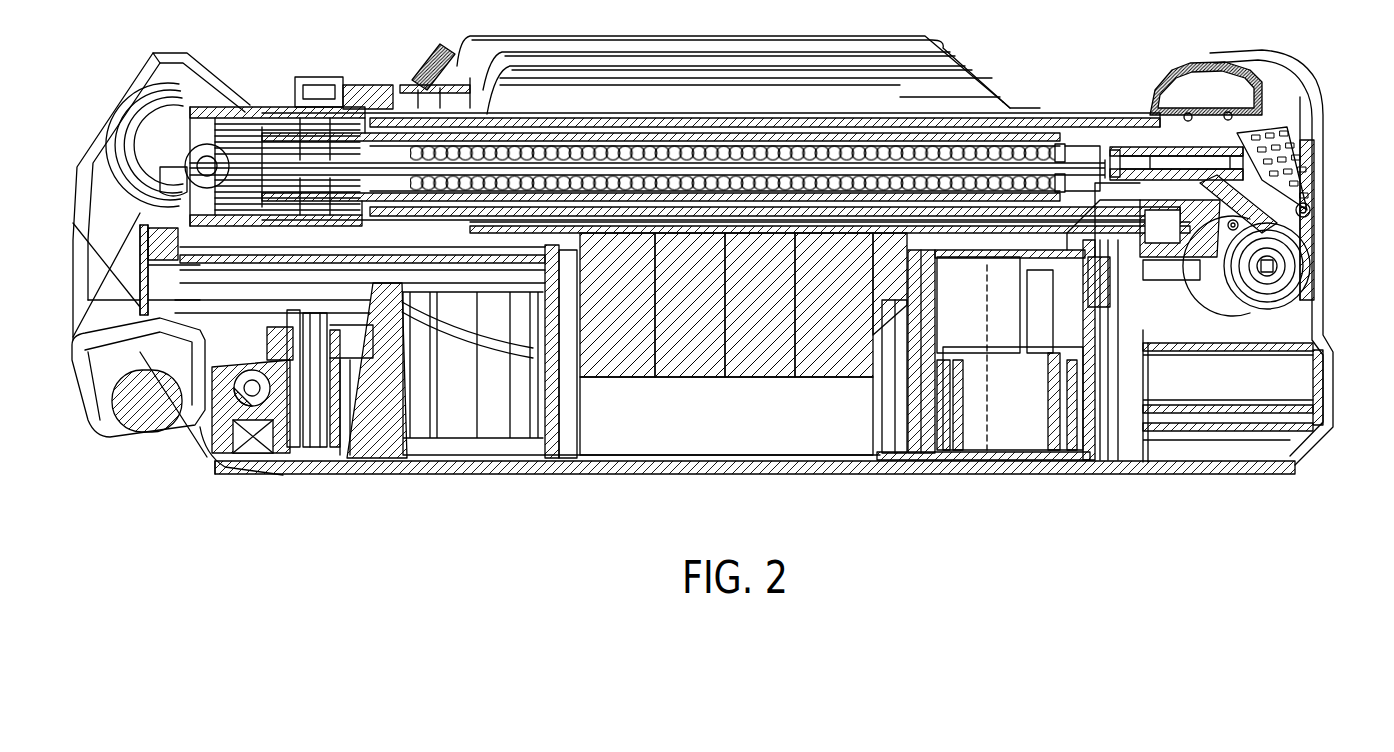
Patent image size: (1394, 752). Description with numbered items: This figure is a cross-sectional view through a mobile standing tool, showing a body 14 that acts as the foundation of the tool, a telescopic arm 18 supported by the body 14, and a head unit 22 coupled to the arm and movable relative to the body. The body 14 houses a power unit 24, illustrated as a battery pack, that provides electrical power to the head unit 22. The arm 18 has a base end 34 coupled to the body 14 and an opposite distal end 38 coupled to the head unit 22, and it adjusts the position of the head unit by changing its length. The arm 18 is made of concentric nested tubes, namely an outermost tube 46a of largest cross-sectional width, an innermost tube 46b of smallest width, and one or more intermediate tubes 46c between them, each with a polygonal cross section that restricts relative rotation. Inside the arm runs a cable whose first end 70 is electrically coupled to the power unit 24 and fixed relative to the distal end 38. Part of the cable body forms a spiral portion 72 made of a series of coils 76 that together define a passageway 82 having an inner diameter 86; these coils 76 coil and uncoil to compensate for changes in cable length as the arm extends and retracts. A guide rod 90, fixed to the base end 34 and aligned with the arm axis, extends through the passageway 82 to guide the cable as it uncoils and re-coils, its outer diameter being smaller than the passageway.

The body 14 is at (752, 436).
The telescopic arm 18 is at (262, 112).
The head unit 22 is at (1307, 140).
The power unit 24 is at (240, 333).
The base end 34 is at (62, 258).
The distal end 38 is at (1150, 123).
The outermost tube 46a is at (657, 205).
The innermost tube 46b is at (767, 205).
The intermediate tube 46c is at (713, 205).
The first end 70 is at (95, 249).
The spiral portion 72 is at (750, 153).
The coils 76 is at (1044, 152).
The passageway 82 is at (604, 205).
The inner diameter 86 is at (593, 167).
The guide rod 90 is at (357, 170).